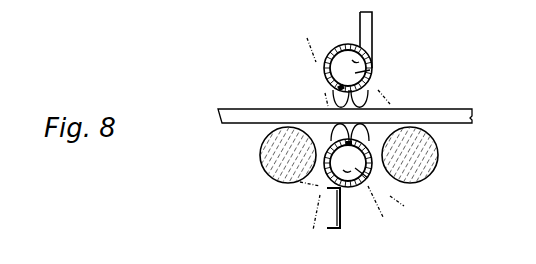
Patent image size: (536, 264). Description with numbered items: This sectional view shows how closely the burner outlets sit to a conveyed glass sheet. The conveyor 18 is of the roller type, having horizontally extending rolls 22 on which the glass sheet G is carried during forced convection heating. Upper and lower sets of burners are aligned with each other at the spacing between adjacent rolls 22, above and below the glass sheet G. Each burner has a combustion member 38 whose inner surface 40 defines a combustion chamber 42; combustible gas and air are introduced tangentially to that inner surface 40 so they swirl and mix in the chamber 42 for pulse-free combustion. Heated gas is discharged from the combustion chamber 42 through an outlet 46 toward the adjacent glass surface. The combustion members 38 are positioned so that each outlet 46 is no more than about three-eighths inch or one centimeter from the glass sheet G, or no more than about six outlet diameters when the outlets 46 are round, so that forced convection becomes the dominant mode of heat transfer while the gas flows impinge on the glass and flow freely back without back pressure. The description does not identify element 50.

The conveyor 18 is at (247, 152).
The rolls 22 is at (273, 177).
The combustion member 38 is at (346, 37).
The inner surface 40 is at (362, 58).
The combustion chamber 42 is at (355, 73).
The outlet 46 is at (332, 82).
The support bar 50 is at (376, 16).
The glass sheet G is at (427, 92).